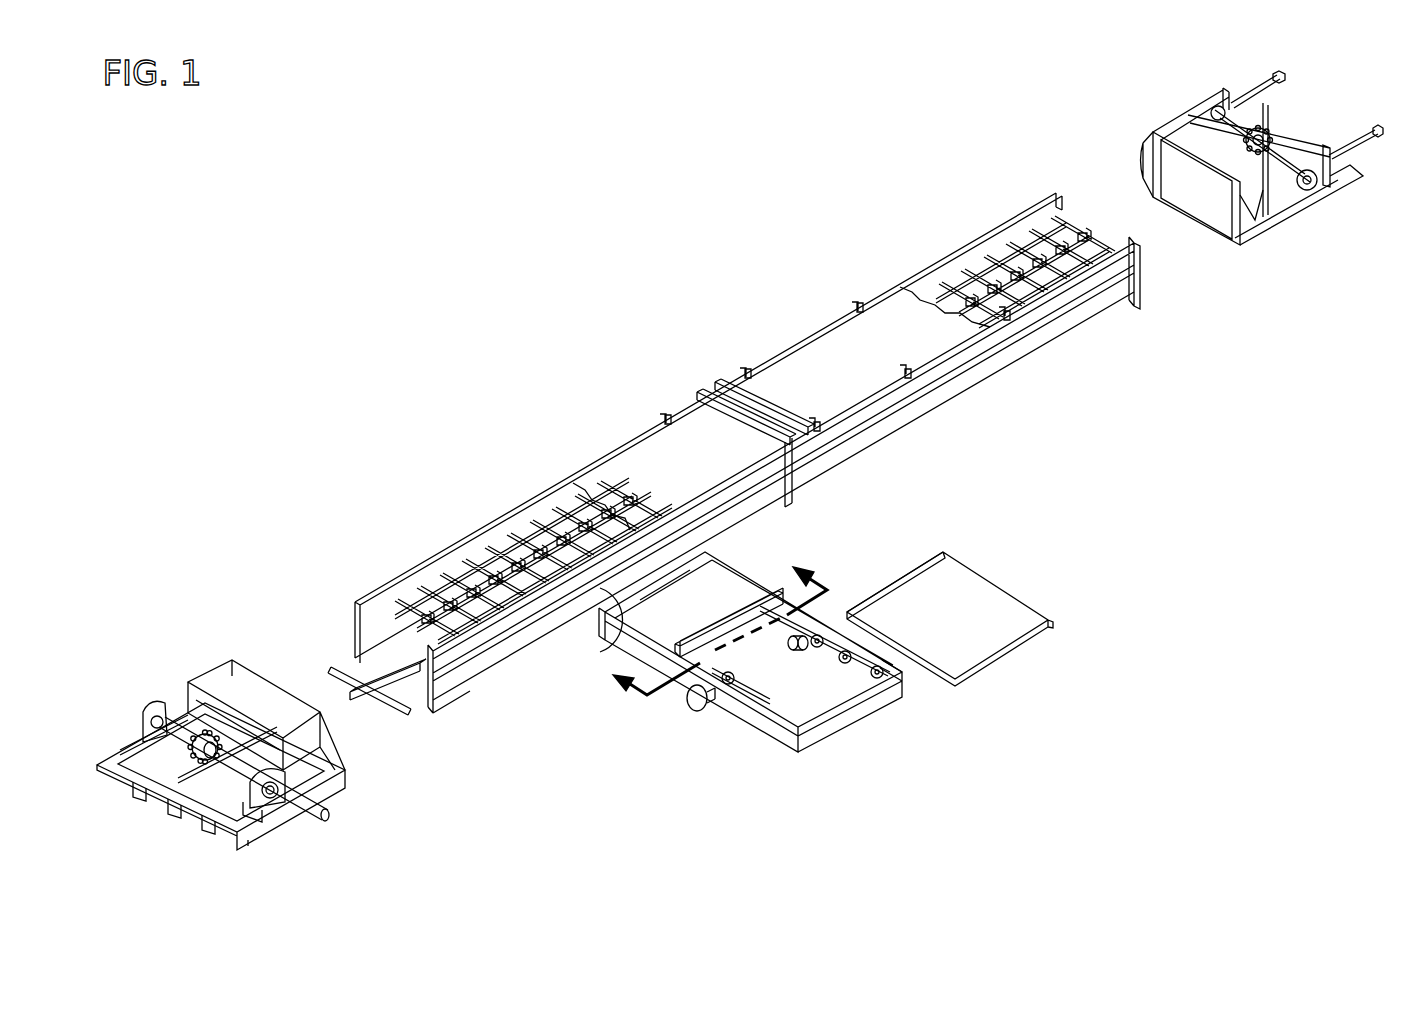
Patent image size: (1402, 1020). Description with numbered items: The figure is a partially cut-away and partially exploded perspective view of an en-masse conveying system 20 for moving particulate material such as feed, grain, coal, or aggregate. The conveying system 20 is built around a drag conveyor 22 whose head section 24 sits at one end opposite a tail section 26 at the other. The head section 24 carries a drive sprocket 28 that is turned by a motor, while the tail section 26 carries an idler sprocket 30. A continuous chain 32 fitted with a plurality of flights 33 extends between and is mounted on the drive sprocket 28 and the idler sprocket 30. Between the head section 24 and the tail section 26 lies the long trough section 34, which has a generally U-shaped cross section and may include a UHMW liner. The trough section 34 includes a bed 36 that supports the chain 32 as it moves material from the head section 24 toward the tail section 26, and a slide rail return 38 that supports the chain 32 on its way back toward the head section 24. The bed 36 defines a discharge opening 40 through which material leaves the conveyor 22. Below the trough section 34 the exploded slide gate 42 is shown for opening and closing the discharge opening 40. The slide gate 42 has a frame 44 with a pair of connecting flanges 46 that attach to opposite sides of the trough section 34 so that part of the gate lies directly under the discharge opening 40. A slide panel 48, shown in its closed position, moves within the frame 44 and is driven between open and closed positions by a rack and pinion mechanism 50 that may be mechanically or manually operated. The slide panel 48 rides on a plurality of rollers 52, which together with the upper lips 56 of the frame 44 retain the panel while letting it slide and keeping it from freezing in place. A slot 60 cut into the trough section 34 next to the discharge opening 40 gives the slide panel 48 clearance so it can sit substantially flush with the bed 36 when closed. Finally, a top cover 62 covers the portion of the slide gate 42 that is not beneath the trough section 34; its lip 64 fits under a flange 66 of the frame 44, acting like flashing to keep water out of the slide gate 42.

The conveying system 20 is at (657, 300).
The drag conveyor 22 is at (430, 553).
The head section 24 is at (190, 685).
The tail section 26 is at (1170, 122).
The drive sprocket 28 is at (200, 770).
The idler sprocket 30 is at (1267, 132).
The continuous chain 32 is at (355, 660).
The flights 33 is at (345, 672).
The trough section 34 is at (550, 485).
The bed 36 is at (433, 693).
The slide rail return 38 is at (570, 540).
The discharge opening 40 is at (620, 636).
The slide gate 42 is at (755, 768).
The frame 44 is at (803, 743).
The connecting flanges 46 is at (705, 552).
The slide panel 48 is at (702, 614).
The rack and pinion mechanism 50 is at (732, 680).
The rollers 52 is at (820, 637).
The upper lips 56 is at (897, 668).
The slot 60 is at (663, 560).
The top cover 62 is at (998, 588).
The lip 64 is at (918, 563).
The flange 66 is at (730, 635).